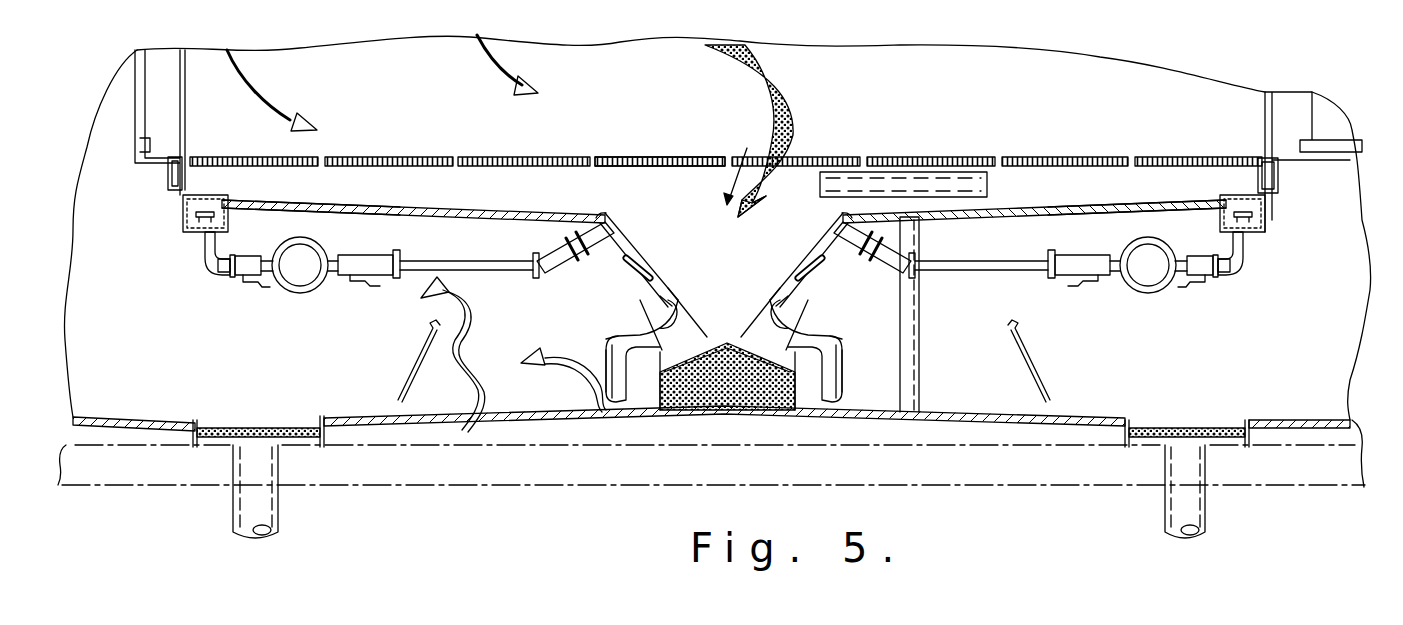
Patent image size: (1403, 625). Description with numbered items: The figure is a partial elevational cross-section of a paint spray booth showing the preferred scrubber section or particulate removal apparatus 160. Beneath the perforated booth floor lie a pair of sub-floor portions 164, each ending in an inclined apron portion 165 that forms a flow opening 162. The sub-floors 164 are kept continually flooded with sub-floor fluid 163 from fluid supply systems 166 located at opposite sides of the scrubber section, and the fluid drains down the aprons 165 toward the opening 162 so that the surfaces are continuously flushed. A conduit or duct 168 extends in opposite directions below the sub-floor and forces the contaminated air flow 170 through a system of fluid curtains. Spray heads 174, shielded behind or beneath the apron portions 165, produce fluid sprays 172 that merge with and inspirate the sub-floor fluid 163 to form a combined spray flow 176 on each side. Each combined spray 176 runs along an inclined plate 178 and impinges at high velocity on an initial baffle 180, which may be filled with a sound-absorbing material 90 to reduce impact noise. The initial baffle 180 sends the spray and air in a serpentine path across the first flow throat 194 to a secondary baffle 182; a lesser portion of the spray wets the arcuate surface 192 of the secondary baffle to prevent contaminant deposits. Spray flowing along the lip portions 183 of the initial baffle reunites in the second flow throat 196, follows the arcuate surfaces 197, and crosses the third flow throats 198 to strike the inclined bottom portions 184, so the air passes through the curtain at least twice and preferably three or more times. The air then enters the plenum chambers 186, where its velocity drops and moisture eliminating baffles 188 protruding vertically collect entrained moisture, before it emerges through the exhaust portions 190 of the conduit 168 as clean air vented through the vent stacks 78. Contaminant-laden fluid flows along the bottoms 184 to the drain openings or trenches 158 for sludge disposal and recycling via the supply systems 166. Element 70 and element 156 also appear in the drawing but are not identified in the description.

The louver assembly 70 is at (653, 158).
The vent stacks 78 is at (116, 115).
The sound-absorbing material 90 is at (707, 395).
The mounting bracket 156 is at (197, 205).
The drain openings or trenches 158 is at (300, 418).
The particulate removal apparatus 160 is at (609, 156).
The flow opening 162 is at (743, 164).
The sub-floor fluid 163 is at (418, 207).
The sub-floor portions 164 is at (352, 197).
The inclined apron portion 165 is at (613, 245).
The fluid supply systems 166 is at (279, 290).
The conduit 168 is at (702, 231).
The contaminated air flow 170 is at (785, 88).
The fluid sprays 172 is at (650, 260).
The spray heads 174 is at (606, 213).
The combined spray flow 176 is at (655, 282).
The inclined plate 178 is at (556, 284).
The initial baffle 180 is at (643, 418).
The secondary baffle 182 is at (670, 327).
The lip portions 183 is at (615, 403).
The inclined bottom portions 184 is at (552, 413).
The plenum chambers 186 is at (483, 340).
The moisture eliminating baffles 188 is at (418, 357).
The exhaust portions 190 is at (127, 298).
The arcuate surface 192 is at (665, 303).
The first flow throat 194 is at (690, 340).
The second flow throat 196 is at (614, 350).
The arcuate surfaces 197 is at (622, 345).
The third flow throats 198 is at (600, 385).